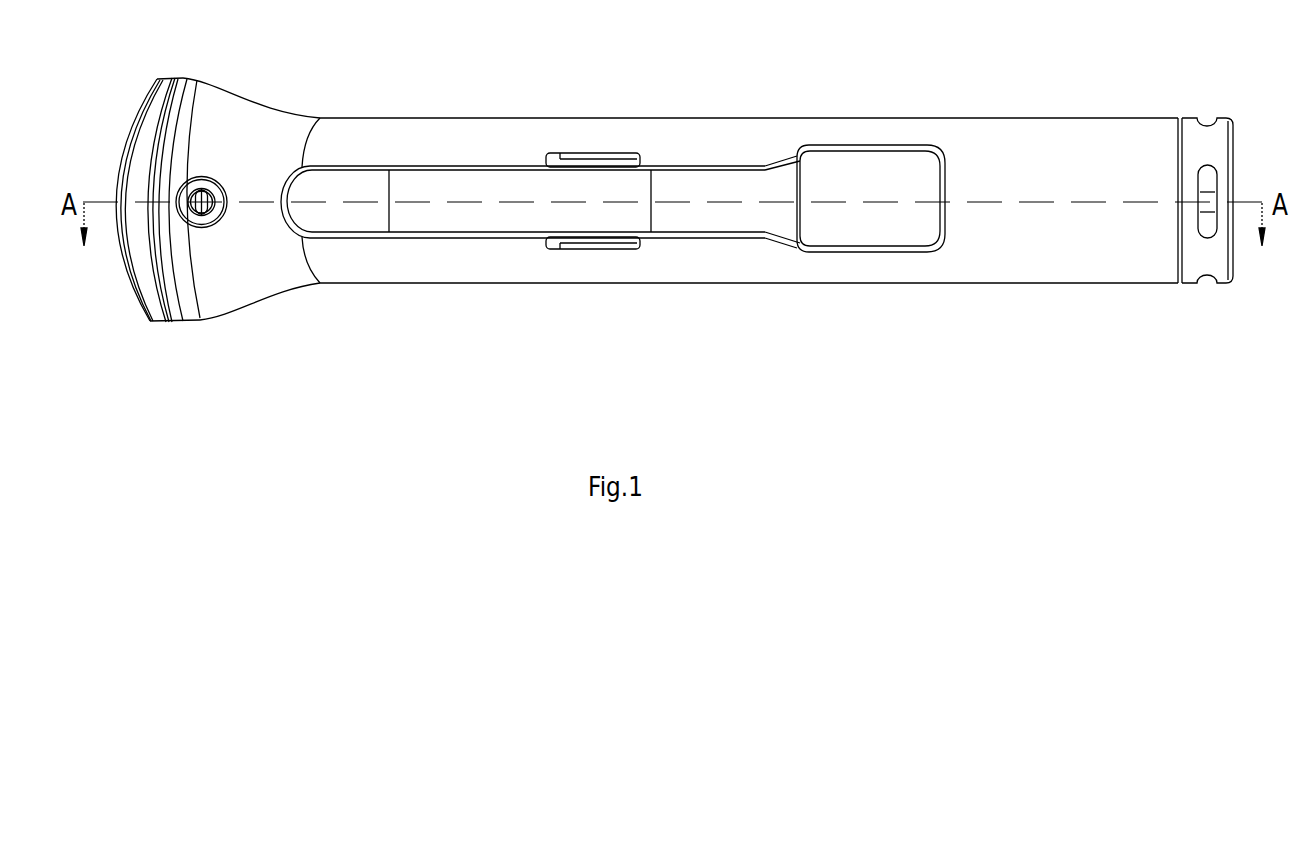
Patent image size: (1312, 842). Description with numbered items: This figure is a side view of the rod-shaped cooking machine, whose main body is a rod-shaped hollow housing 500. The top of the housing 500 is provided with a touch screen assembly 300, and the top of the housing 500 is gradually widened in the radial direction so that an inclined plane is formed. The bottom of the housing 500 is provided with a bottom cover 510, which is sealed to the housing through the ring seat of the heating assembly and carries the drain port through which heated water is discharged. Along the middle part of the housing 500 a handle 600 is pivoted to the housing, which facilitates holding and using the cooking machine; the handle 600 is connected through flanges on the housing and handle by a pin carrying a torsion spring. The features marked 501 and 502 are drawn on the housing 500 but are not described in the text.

The touch screen assembly 300 is at (113, 171).
The housing 500 is at (1030, 153).
The switch button 501 is at (210, 223).
The charging port 502 is at (1209, 180).
The bottom cover 510 is at (1207, 262).
The handle 600 is at (527, 187).